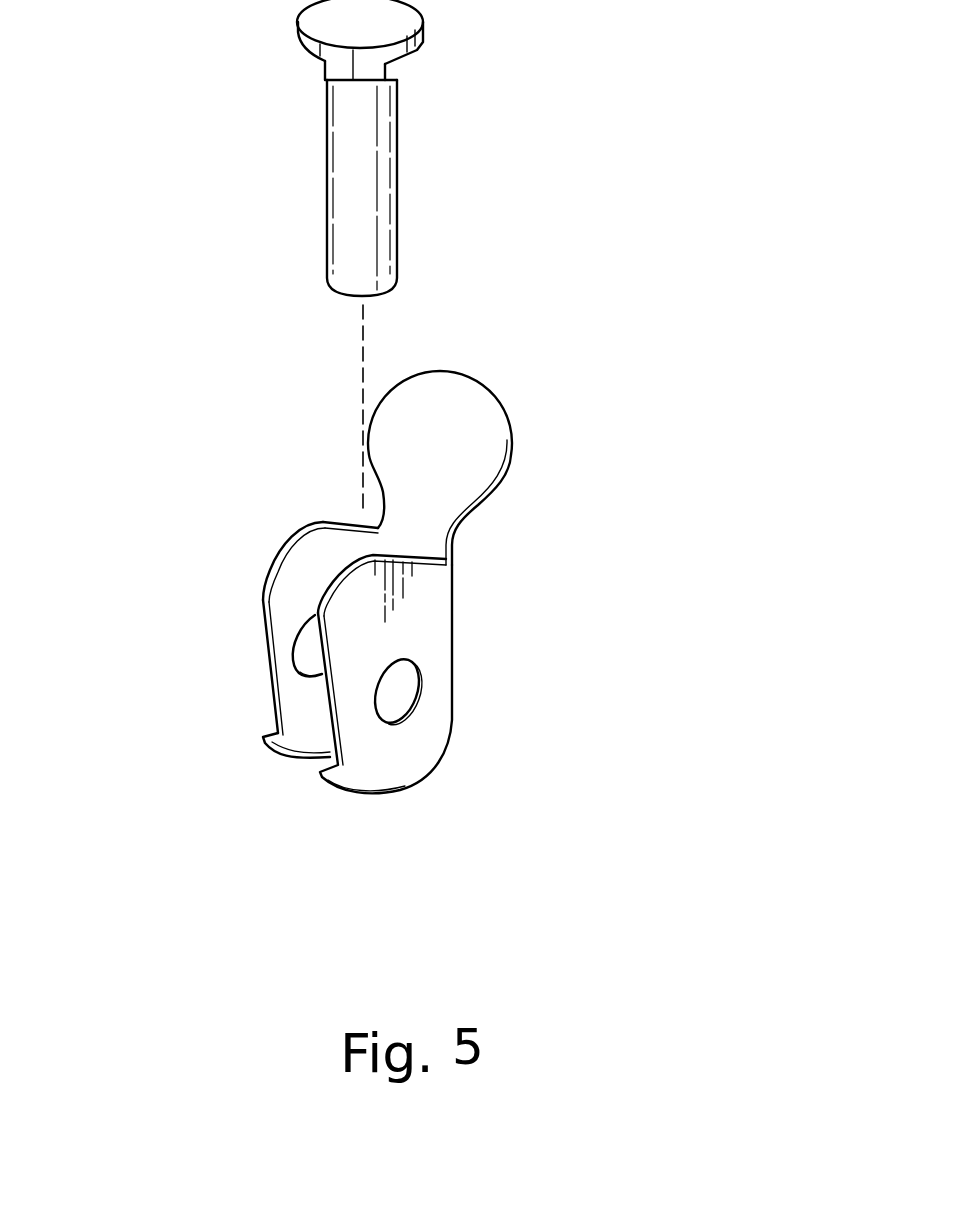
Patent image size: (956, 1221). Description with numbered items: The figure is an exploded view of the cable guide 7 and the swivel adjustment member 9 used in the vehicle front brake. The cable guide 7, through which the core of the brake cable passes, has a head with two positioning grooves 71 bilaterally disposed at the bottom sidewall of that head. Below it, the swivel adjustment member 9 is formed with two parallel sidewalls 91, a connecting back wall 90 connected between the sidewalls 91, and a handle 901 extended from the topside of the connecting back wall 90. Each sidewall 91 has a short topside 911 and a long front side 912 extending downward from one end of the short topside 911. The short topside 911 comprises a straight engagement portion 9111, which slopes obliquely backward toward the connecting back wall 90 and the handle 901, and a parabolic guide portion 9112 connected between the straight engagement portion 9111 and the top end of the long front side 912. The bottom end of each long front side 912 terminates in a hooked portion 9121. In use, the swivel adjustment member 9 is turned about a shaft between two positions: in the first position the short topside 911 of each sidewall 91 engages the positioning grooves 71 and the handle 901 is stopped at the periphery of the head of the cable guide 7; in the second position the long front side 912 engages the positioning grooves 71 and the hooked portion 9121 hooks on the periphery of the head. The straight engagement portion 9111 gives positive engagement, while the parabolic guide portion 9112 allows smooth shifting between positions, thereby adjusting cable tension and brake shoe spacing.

The cable guide 7 is at (462, 148).
The positioning grooves 71 is at (413, 60).
The swivel adjustment member 9 is at (380, 582).
The connecting back wall 90 is at (400, 543).
The handle 901 is at (512, 455).
The parallel sidewalls 91 is at (315, 589).
The short topside 911 is at (221, 493).
The straight engagement portion 9111 is at (350, 522).
The parabolic guide portion 9112 is at (288, 573).
The long front side 912 is at (202, 688).
The hooked portion 9121 is at (262, 732).